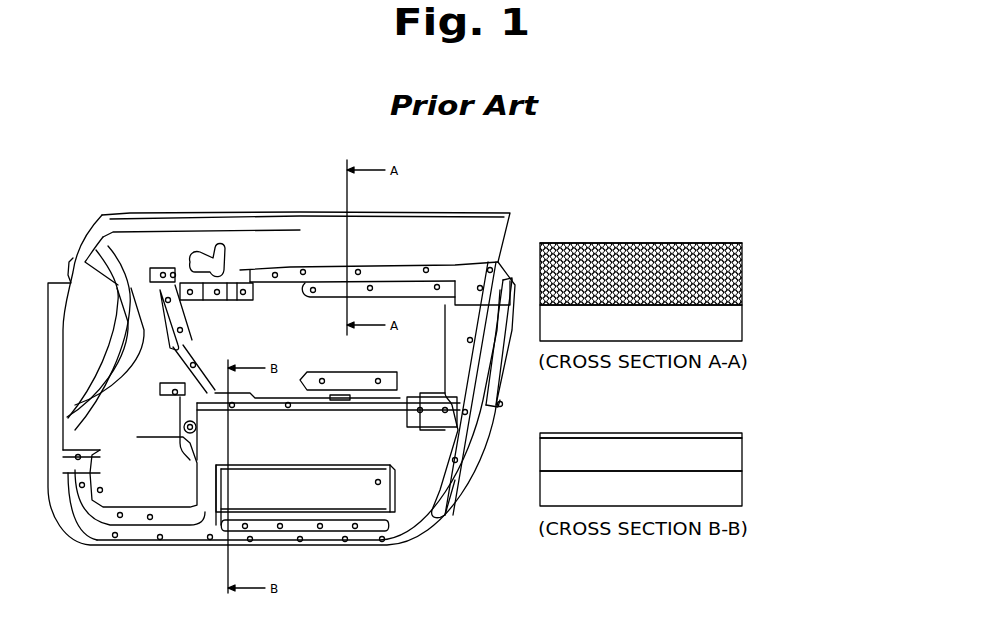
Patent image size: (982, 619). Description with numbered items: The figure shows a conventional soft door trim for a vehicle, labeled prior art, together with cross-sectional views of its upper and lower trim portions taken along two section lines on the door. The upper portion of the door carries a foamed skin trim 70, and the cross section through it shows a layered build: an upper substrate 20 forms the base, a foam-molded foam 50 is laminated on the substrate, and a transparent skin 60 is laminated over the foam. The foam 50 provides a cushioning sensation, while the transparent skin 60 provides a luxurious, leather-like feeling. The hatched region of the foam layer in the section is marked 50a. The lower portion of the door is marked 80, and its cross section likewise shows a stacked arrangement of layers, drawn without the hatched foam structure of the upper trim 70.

The upper substrate 20 is at (743, 320).
The foam 50 is at (743, 278).
The foam cells 50a is at (743, 263).
The transparent skin 60 is at (742, 243).
The foamed skin trim 70 is at (285, 236).
The lower door trim portion 80 is at (328, 505).